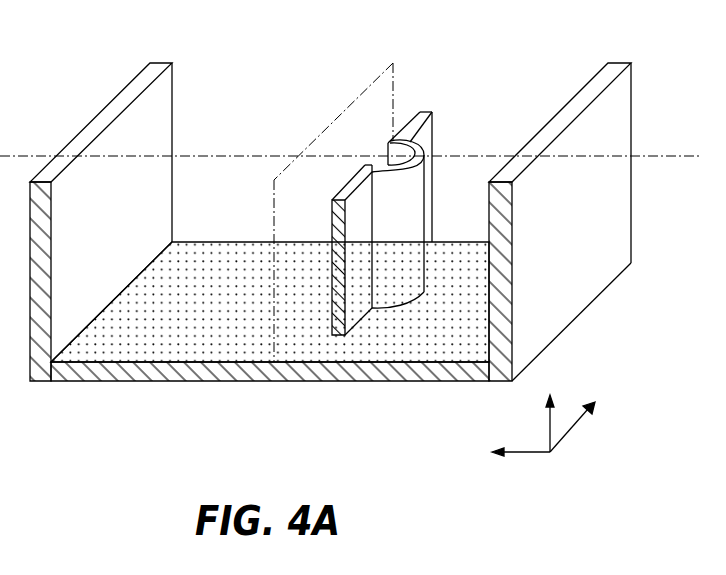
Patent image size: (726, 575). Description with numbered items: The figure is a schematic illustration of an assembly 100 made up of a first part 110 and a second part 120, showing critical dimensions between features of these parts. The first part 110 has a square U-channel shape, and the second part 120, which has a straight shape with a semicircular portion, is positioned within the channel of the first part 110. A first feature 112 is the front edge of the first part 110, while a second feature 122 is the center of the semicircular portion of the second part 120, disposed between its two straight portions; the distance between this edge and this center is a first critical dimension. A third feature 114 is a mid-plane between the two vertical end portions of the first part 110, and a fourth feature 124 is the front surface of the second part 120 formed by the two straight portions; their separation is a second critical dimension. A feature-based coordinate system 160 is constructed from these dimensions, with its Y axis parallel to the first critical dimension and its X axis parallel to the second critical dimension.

The assembly 100 is at (328, 237).
The first part 110 is at (603, 82).
The first feature 112 is at (108, 382).
The third feature 114 is at (290, 368).
The second part 120 is at (335, 186).
The second feature 122 is at (380, 152).
The fourth feature 124 is at (282, 186).
The feature-based coordinate system 160 is at (573, 433).